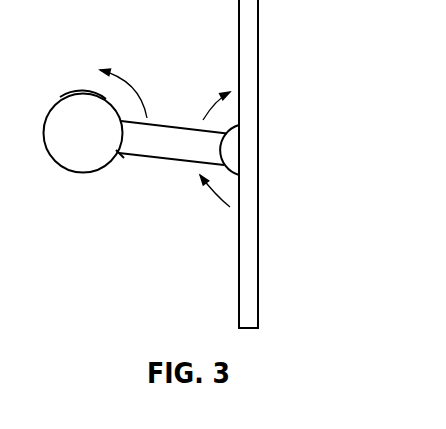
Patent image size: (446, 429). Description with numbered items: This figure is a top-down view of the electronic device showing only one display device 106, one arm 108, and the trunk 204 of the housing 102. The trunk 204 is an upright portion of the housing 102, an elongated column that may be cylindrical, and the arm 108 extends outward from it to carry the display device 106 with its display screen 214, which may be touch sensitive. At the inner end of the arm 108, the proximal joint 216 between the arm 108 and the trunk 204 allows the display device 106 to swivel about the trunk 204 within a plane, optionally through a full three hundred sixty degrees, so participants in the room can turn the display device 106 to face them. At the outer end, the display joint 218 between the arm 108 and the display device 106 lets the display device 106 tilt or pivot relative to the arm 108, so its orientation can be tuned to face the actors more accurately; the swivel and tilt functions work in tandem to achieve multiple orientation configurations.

The housing 102 is at (47, 117).
The display device 106 is at (250, 33).
The arm 108 is at (192, 140).
The trunk 204 is at (90, 110).
The display screen 214 is at (258, 168).
The proximal joint 216 is at (120, 160).
The display joint 218 is at (226, 141).